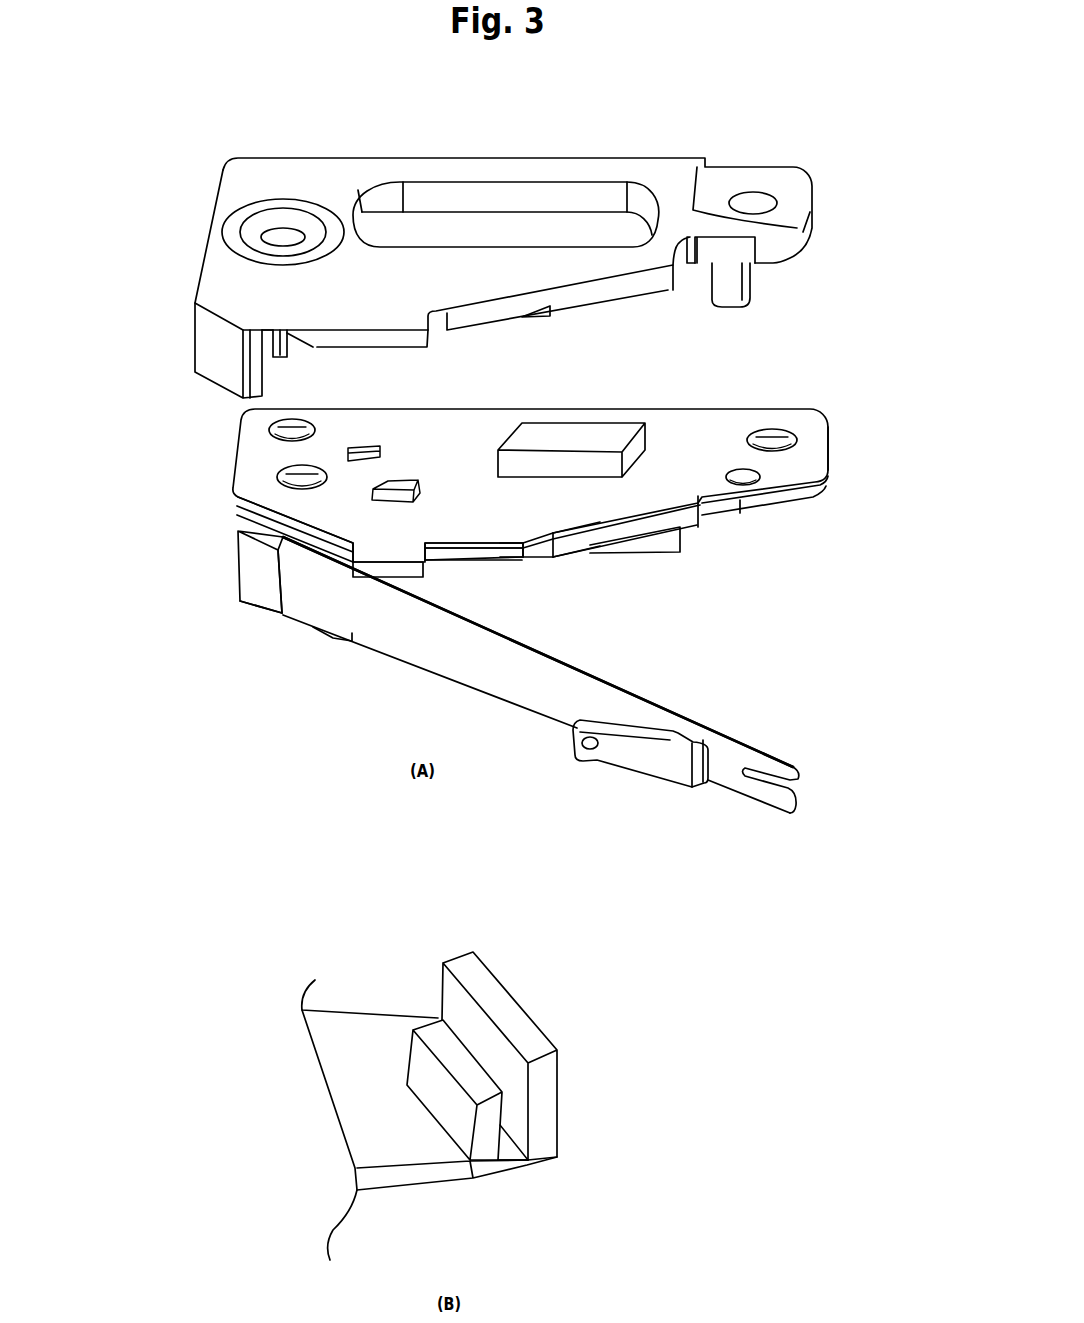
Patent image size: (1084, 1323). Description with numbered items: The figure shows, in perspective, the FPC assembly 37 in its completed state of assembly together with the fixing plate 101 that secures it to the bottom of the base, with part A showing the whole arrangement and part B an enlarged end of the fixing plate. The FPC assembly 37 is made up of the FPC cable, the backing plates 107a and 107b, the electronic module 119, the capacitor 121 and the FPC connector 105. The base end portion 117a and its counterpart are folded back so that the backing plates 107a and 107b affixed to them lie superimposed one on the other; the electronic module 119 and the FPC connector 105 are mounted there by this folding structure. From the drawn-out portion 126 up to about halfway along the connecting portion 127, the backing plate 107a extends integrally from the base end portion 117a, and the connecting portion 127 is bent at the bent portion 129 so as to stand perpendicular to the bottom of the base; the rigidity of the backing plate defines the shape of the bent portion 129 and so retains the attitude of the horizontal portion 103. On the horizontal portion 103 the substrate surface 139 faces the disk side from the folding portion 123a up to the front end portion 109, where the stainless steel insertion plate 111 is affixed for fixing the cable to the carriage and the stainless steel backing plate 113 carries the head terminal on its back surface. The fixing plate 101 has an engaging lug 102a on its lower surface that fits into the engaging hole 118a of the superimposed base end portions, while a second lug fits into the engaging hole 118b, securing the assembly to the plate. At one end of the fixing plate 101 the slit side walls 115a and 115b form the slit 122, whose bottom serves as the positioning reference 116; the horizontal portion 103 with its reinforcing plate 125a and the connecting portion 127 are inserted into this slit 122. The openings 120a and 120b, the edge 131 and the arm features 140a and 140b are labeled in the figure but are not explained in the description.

The FPC assembly 37 is at (815, 584).
The fixing plate 101 is at (512, 167).
The engaging lug 102a is at (758, 295).
The horizontal portion 103 is at (500, 672).
The FPC connector 105 is at (672, 553).
The backing plate 107a is at (505, 553).
The backing plate 107b is at (587, 546).
The front end portion 109 is at (677, 733).
The insertion plate 111 is at (778, 757).
The backing plate 113 is at (640, 758).
The slit side wall 115a is at (222, 372).
The slit side wall 115b is at (288, 353).
The positioning reference 116 is at (523, 1150).
The base end portion 117a is at (702, 425).
The engaging hole 118a is at (753, 483).
The engaging hole 118b is at (312, 424).
The electronic module 119 is at (572, 422).
The hole 120a is at (288, 478).
The hole 120b is at (788, 430).
The capacitor 121 is at (411, 439).
The slit 122 is at (280, 380).
The folding portion 123a is at (223, 567).
The reinforcing plate 125a is at (260, 590).
The drawn-out portion 126 is at (373, 545).
The connecting portion 127 is at (417, 583).
The bent portion 129 is at (373, 568).
The lower edge 131 is at (243, 604).
The substrate surface 139 is at (422, 653).
The lower tab 140a is at (380, 652).
The upper edge 140b is at (543, 652).